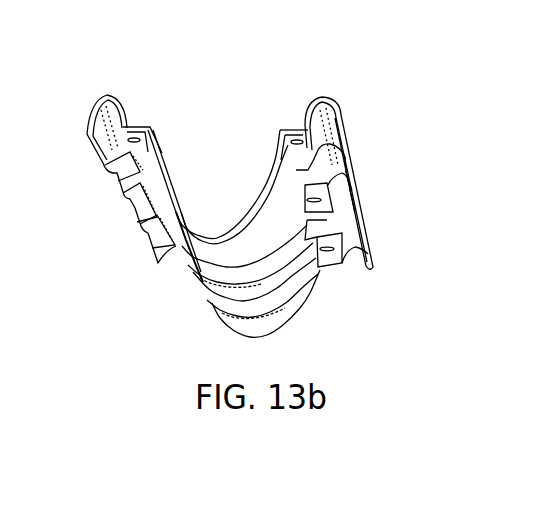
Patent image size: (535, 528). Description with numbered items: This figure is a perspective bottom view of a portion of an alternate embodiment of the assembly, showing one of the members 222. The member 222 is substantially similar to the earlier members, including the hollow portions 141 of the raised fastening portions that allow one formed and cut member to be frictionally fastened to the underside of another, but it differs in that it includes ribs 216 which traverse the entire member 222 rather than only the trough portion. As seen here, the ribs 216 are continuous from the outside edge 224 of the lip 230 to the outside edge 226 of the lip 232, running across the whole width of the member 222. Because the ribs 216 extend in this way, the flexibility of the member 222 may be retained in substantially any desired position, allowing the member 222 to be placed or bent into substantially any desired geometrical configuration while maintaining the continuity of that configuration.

The hollow portions 141 is at (137, 127).
The ribs 216 is at (340, 152).
The member 222 is at (221, 235).
The outside edge 224 is at (353, 198).
The outside edge 226 is at (104, 167).
The lip 230 is at (323, 98).
The lip 232 is at (95, 104).